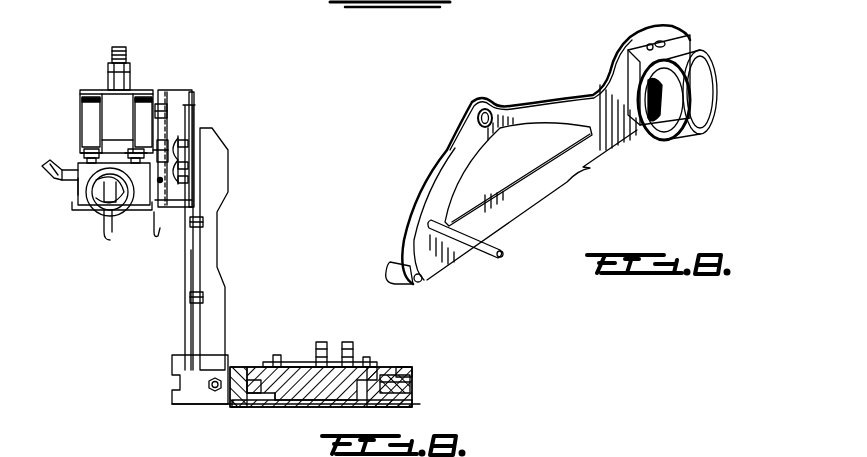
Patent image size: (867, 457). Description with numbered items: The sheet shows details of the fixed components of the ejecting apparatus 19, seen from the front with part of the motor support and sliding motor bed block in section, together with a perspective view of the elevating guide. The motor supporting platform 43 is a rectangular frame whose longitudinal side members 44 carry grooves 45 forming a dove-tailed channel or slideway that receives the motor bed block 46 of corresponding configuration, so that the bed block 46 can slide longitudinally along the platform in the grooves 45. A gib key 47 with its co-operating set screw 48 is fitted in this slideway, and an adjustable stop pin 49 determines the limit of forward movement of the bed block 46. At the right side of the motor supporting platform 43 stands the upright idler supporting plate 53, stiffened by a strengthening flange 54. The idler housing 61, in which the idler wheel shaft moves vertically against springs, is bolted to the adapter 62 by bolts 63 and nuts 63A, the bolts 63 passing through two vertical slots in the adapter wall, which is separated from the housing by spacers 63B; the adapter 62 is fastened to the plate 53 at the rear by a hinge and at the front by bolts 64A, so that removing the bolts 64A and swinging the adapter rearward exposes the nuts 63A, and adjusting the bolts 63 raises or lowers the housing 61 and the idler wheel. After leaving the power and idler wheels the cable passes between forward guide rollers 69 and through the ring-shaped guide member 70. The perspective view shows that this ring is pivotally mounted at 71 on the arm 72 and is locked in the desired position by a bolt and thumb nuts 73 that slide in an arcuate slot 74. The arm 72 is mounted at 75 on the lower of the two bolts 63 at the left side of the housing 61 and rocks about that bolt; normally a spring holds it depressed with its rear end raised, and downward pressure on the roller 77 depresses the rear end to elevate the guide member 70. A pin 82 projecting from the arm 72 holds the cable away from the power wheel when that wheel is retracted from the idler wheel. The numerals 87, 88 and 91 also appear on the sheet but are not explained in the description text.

In FIG. 6, the ejecting apparatus 19 is at (190, 380).
In FIG. 6, the motor supporting platform 43 is at (395, 408).
In FIG. 6, the longitudinal side members 44 is at (412, 402).
In FIG. 6, the grooves 45 is at (240, 380).
In FIG. 6, the motor bed block 46 is at (305, 367).
In FIG. 6, the gib key 47 is at (383, 373).
In FIG. 6, the set screw 48 is at (414, 380).
In FIG. 6, the adjustable stop pin 49 is at (275, 405).
In FIG. 6, the idler supporting plate 53 is at (188, 270).
In FIG. 6, the strengthening flange 54 is at (213, 300).
In FIG. 6, the housing 61 is at (125, 97).
In FIG. 6, the adapter 62 is at (176, 92).
In FIG. 6, the bolts 63 is at (168, 110).
In FIG. 6, the nuts 63A is at (170, 118).
In FIG. 6, the spacers 63B is at (194, 100).
In FIG. 6, the bolts 64A is at (190, 165).
In FIG. 6, the forward guide rollers 69 is at (102, 233).
In FIG. 6, the guide member 70 is at (94, 212).
In FIG. 8, the guide member 70 is at (706, 85).
In FIG. 6, the pivot 71 is at (170, 200).
In FIG. 8, the pivot 71 is at (632, 138).
In FIG. 6, the arm 72 is at (156, 239).
In FIG. 8, the arm 72 is at (588, 160).
In FIG. 6, the bolt and thumb nuts 73 is at (162, 181).
In FIG. 8, the bolt and thumb nuts 73 is at (648, 46).
In FIG. 8, the arcuate slot 74 is at (665, 44).
In FIG. 8, the mounting point 75 is at (492, 110).
In FIG. 8, the roller 77 is at (397, 262).
In FIG. 8, the pin 82 is at (499, 258).
In FIG. 6, the member 87 is at (222, 450).
In FIG. 6, the member 88 is at (200, 456).
In FIG. 6, the member 91 is at (153, 450).